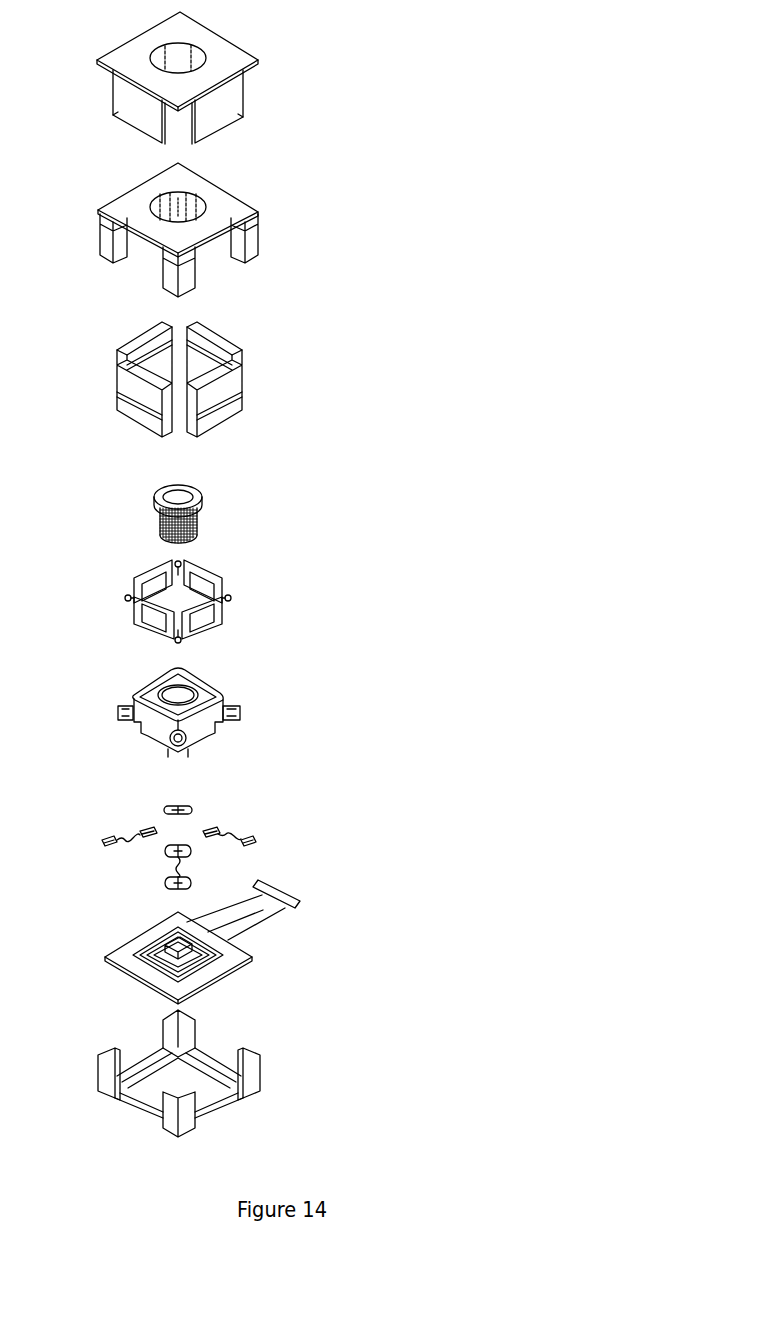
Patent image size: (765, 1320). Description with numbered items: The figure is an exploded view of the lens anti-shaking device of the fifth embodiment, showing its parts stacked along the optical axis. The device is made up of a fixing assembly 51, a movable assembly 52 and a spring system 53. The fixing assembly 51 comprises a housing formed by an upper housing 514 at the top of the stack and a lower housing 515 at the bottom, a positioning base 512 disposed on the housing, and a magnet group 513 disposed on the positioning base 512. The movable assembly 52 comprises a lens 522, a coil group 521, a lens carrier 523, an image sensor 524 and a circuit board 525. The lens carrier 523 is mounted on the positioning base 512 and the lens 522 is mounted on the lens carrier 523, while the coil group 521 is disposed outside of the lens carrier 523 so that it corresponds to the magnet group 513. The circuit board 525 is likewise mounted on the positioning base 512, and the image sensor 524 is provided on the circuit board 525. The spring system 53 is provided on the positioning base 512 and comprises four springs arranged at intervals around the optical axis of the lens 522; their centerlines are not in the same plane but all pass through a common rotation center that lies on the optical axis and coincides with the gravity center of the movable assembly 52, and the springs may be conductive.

The fixing assembly 51 is at (452, 287).
The upper housing 514 is at (243, 105).
The positioning base 512 is at (236, 203).
The magnet group 513 is at (226, 350).
The movable assembly 52 is at (440, 433).
The lens 522 is at (202, 497).
The coil group 521 is at (229, 598).
The lens carrier 523 is at (225, 698).
The spring system 53 is at (246, 845).
The circuit board 525 is at (290, 903).
The image sensor 524 is at (233, 943).
The lower housing 515 is at (259, 1063).